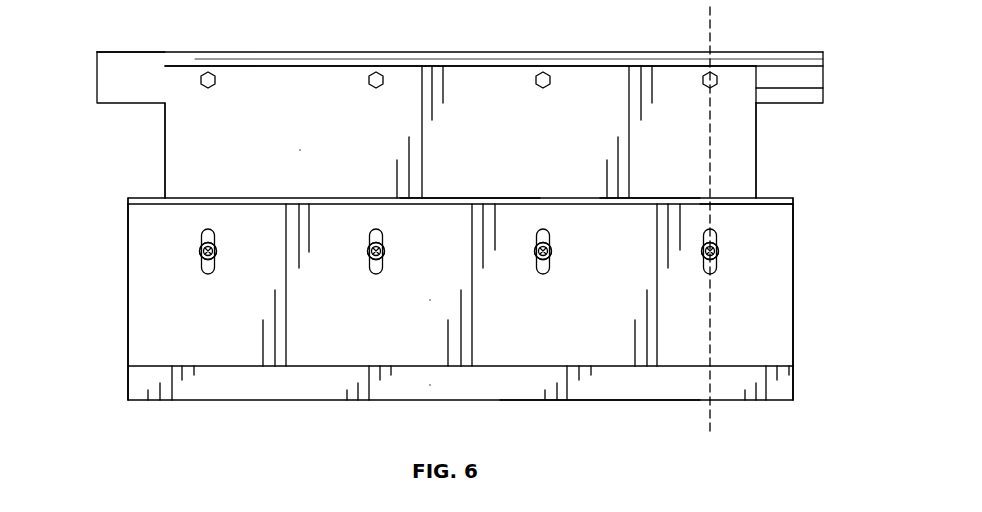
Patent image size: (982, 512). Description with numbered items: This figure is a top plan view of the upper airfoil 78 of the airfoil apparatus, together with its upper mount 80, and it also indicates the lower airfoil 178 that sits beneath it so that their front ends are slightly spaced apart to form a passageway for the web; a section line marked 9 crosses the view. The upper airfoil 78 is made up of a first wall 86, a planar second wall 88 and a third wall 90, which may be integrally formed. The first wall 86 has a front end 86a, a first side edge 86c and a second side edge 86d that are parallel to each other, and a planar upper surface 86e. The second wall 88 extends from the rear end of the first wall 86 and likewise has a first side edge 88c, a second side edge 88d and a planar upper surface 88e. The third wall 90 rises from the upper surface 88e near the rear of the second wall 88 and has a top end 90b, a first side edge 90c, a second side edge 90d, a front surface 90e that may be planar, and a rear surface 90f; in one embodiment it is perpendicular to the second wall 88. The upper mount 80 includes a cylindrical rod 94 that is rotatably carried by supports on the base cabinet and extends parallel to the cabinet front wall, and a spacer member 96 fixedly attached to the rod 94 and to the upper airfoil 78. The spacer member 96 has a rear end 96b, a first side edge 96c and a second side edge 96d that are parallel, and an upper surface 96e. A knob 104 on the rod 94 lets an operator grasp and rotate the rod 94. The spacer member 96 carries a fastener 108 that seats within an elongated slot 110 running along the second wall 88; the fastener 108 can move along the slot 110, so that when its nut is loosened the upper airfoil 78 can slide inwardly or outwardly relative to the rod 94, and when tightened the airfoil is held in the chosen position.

The upper airfoil 78 is at (799, 353).
The upper mount 80 is at (79, 108).
The first wall 86 is at (302, 401).
The front end 86a is at (583, 401).
The first side edge 86c is at (795, 385).
The second side edge 86d is at (128, 388).
The upper surface 86e is at (454, 396).
The second wall 88 is at (157, 262).
The first side edge 88c is at (795, 262).
The second side edge 88d is at (128, 335).
The upper surface 88e is at (454, 299).
The third wall 90 is at (205, 198).
The top end 90b is at (463, 198).
The first side edge 90c is at (795, 200).
The second side edge 90d is at (128, 200).
The front surface 90e is at (764, 206).
The rear surface 90f is at (650, 198).
The cylindrical rod 94 is at (783, 60).
The spacer member 96 is at (275, 100).
The rear end 96b is at (487, 65).
The first side edge 96c is at (758, 118).
The second side edge 96d is at (165, 143).
The upper surface 96e is at (331, 152).
The knob 104 is at (212, 70).
The fastener 108 is at (212, 245).
The elongated slot 110 is at (215, 260).
The lower airfoil 178 is at (116, 355).
The section line 9- 9 is at (710, 7).